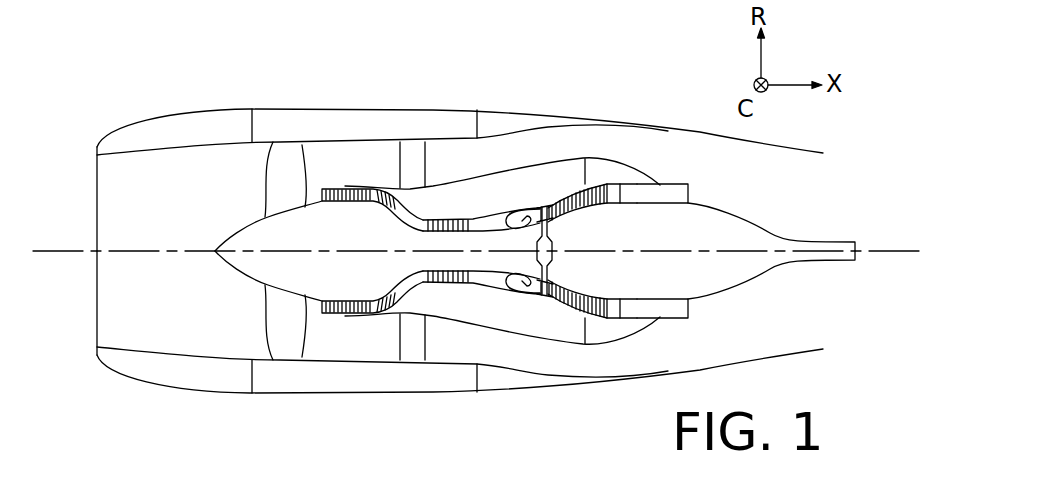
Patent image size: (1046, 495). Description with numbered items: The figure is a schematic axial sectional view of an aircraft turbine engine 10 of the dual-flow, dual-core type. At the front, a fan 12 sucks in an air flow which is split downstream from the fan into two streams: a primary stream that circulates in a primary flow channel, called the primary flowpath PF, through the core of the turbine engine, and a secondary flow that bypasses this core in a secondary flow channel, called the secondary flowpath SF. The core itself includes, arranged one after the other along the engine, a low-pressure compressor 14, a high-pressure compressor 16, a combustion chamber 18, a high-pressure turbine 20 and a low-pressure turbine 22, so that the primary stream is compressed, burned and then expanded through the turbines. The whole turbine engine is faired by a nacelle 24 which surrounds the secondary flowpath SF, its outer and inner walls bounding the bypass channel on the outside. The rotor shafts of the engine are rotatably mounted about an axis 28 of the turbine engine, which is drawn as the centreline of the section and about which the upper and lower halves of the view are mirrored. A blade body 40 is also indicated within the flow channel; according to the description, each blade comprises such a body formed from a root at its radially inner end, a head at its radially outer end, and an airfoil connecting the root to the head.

The aircraft turbine engine 10 is at (256, 71).
The fan 12 is at (277, 317).
The low-pressure compressor 14 is at (343, 190).
The high-pressure compressor 16 is at (458, 220).
The combustion chamber 18 is at (516, 208).
The high-pressure turbine 20 is at (546, 205).
The low-pressure turbine 22 is at (611, 186).
The nacelle 24 is at (372, 122).
The axis 28 is at (40, 249).
The body 40 is at (435, 344).
The secondary flowpath SF is at (337, 345).
The primary flowpath PF is at (413, 288).